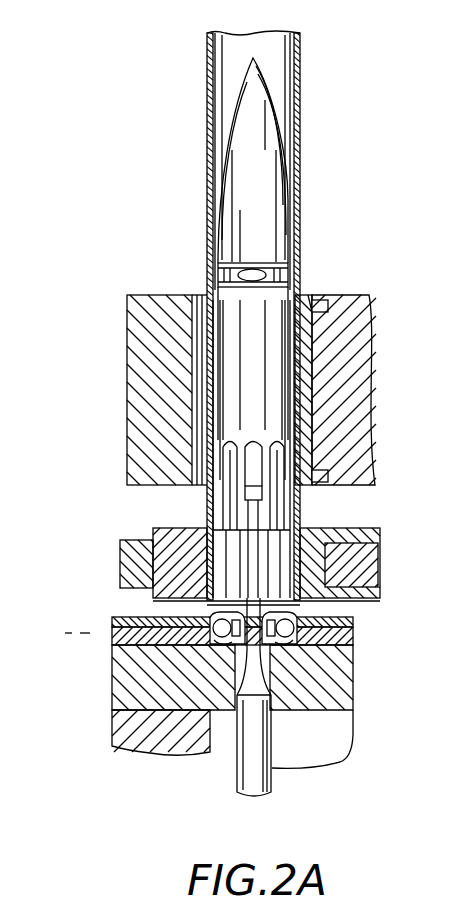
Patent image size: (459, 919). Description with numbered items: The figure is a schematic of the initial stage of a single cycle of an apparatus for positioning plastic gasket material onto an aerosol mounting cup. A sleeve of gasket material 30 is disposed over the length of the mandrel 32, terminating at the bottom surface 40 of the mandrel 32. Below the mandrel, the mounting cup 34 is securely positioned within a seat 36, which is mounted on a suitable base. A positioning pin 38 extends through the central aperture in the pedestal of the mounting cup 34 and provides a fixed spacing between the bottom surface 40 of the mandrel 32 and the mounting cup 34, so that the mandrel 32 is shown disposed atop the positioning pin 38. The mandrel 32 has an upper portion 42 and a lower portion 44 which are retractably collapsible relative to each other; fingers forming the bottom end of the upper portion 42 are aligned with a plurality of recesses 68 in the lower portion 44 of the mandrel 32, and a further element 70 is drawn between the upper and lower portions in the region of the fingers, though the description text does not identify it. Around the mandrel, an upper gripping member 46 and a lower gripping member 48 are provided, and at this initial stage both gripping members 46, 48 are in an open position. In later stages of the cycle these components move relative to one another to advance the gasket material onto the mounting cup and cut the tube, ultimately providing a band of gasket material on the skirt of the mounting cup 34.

The sleeve of gasket material 30 is at (207, 136).
The mandrel 32 is at (238, 314).
The mounting cup 34 is at (300, 610).
The seat 36 is at (260, 645).
The positioning pin 38 is at (330, 648).
The bottom surface of the mandrel 40 is at (300, 604).
The upper portion of the mandrel 42 is at (290, 408).
The lower portion of the mandrel 44 is at (318, 537).
The upper gripping member 46 is at (360, 347).
The lower gripping member 48 is at (138, 552).
The recesses 68 is at (235, 485).
The central stem 70 is at (245, 518).